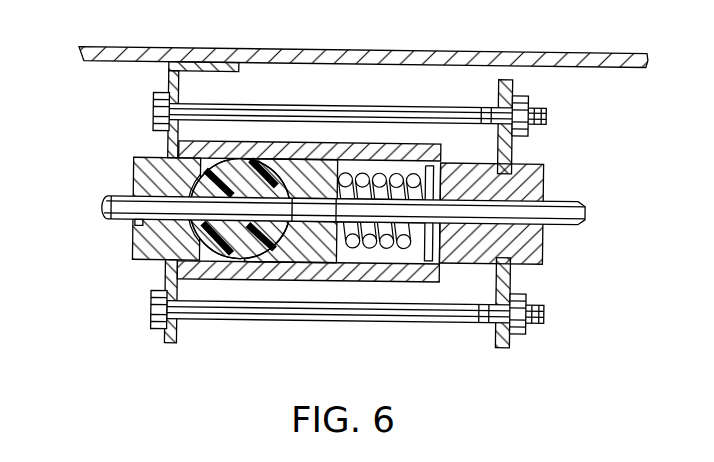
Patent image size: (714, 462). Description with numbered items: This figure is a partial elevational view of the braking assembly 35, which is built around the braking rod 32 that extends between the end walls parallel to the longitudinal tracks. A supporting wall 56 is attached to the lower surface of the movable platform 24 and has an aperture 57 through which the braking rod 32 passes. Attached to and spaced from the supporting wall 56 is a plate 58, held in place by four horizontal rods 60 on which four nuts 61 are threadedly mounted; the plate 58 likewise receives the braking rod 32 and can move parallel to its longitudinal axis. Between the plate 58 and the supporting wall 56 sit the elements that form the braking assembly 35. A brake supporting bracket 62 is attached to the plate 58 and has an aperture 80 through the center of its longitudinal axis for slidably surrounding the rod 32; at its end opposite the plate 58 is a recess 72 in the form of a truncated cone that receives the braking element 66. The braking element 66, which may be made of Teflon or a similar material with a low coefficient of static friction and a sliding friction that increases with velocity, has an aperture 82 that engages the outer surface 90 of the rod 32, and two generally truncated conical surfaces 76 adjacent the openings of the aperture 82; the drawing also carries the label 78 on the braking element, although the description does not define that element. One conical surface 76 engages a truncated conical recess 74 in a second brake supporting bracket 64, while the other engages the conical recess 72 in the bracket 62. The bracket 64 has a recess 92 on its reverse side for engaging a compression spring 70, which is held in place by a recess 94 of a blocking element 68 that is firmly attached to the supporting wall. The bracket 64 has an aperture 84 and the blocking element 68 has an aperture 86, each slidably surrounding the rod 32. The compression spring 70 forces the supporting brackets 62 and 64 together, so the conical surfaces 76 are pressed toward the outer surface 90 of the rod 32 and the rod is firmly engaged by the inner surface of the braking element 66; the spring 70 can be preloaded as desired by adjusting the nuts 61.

The movable platform 24 is at (331, 56).
The braking rod 32 is at (101, 209).
The braking assembly 35 is at (458, 356).
The supporting wall 56 is at (167, 273).
The aperture 57 is at (177, 262).
The plate 58 is at (513, 277).
The horizontal rods 60 is at (390, 112).
The nuts 61 is at (528, 99).
The brake supporting bracket 62 is at (150, 263).
The brake supporting bracket 64 is at (337, 266).
The braking element 66 is at (255, 155).
The blocking element 68 is at (474, 166).
The compression spring 70 is at (387, 266).
The recess 72 is at (171, 154).
The truncated conical recess 74 is at (272, 183).
The truncated conical surfaces 76 is at (258, 232).
The upper ball bearing band 78 is at (243, 163).
The aperture 80 is at (135, 223).
The aperture 82 is at (186, 192).
The aperture 84 is at (303, 202).
The aperture 86 is at (546, 206).
The outer surface 90 is at (116, 198).
The recess 92 is at (350, 265).
The recess 94 is at (440, 272).